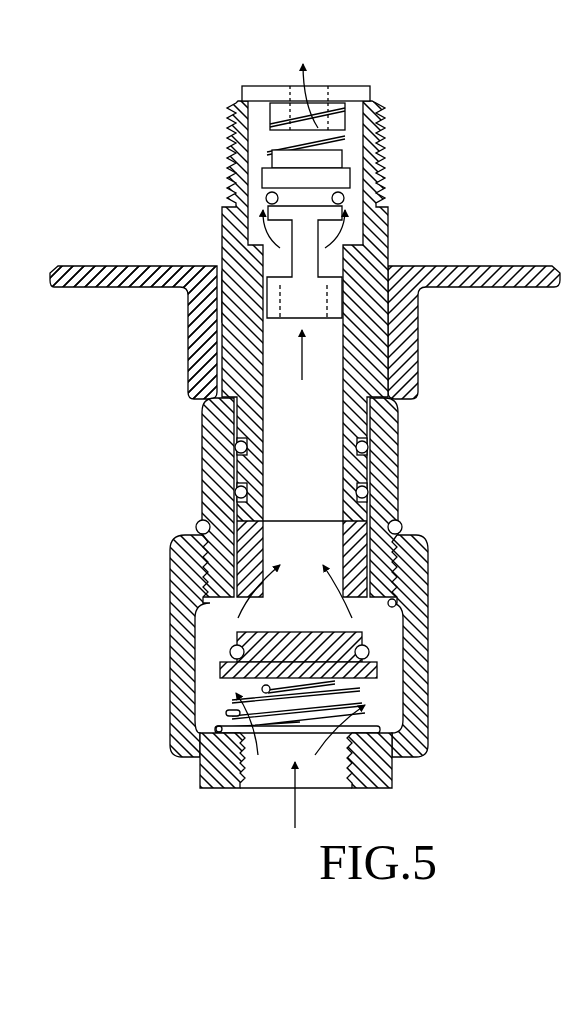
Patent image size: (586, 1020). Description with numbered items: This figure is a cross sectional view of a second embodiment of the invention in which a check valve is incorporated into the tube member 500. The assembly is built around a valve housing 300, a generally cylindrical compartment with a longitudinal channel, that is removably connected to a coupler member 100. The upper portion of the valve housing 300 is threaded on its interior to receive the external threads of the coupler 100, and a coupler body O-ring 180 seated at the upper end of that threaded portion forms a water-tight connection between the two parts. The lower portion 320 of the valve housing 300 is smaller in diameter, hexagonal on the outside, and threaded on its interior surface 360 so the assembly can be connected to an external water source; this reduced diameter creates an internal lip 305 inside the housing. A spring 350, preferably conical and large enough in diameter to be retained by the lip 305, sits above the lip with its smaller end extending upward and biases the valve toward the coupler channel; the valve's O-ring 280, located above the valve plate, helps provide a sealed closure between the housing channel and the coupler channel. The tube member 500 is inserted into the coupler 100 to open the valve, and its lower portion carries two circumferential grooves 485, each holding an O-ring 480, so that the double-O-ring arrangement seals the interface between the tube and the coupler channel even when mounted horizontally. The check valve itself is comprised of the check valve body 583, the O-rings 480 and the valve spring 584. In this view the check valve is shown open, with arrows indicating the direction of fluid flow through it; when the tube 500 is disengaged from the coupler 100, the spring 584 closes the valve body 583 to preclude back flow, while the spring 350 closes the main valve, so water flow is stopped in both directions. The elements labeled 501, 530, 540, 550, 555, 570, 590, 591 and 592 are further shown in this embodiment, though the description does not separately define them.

The coupler member 100 is at (176, 481).
The coupler body O-ring 180 is at (403, 525).
The O-ring 280 is at (232, 650).
The valve housing 300 is at (429, 657).
The internal lip 305 is at (222, 731).
The lower portion of the valve housing 320 is at (203, 775).
The spring 350 is at (228, 714).
The interior surface 360 is at (215, 790).
The O-ring 480 is at (368, 445).
The circumferential grooves 485 is at (200, 406).
The tube member 500 is at (216, 147).
The cap 501 is at (238, 93).
The upper body 530 is at (386, 143).
The chamber 540 is at (406, 620).
The right detent 550 is at (370, 308).
The left detent 555 is at (236, 278).
The stem 570 is at (338, 258).
The check valve body 583 is at (345, 181).
The valve spring 584 is at (352, 110).
The valve disc 590 is at (372, 669).
The spring end 591 is at (325, 683).
The port 592 is at (396, 603).